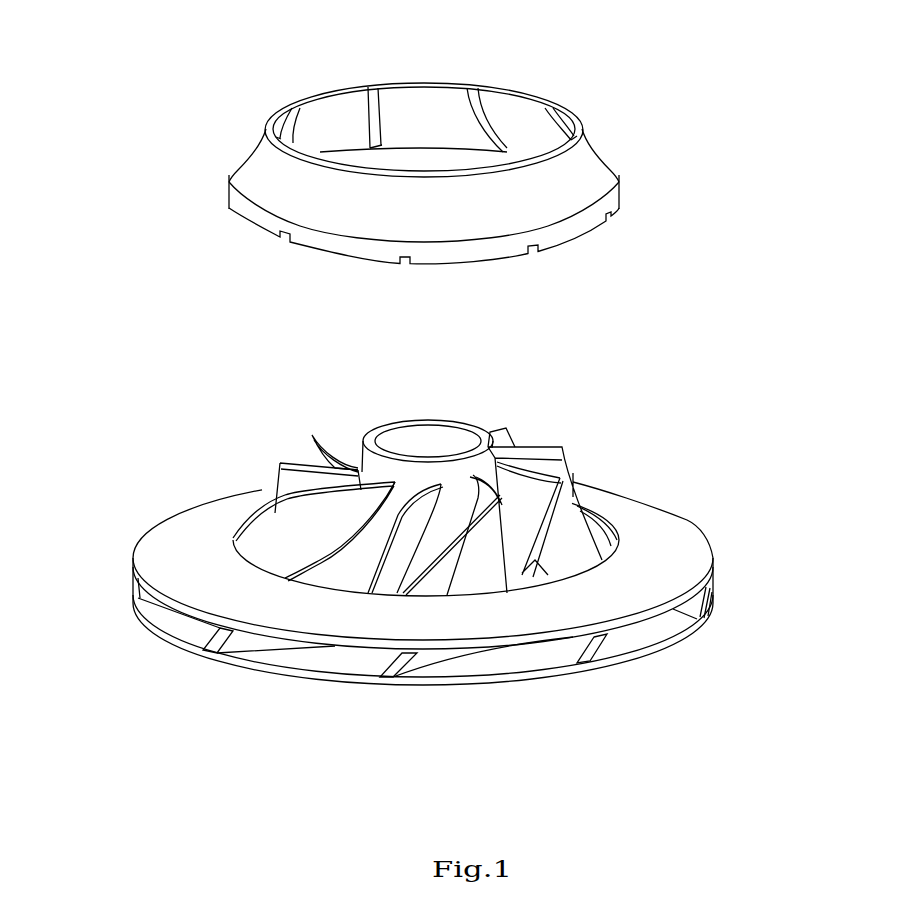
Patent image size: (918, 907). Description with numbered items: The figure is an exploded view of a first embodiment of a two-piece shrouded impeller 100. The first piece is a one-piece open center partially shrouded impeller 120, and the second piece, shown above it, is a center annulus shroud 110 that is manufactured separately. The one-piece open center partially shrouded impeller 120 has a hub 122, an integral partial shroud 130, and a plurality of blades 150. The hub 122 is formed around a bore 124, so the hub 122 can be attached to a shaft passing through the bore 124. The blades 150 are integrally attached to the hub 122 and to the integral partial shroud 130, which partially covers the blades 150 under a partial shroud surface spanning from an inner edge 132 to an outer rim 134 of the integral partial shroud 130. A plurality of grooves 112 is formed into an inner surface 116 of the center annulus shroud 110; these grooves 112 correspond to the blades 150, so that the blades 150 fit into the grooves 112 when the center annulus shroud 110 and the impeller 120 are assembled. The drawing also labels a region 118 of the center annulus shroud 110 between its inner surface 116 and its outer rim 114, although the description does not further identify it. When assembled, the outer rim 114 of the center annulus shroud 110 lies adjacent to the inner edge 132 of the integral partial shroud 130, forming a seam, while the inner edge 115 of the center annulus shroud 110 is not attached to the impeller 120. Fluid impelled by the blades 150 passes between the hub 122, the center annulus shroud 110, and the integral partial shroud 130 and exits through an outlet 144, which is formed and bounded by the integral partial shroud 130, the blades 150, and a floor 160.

The two-piece shrouded impeller 100 is at (138, 314).
The center annulus shroud 110 is at (634, 142).
The grooves 112 is at (373, 103).
The outer rim of center annulus shroud 114 is at (577, 230).
The inner edge of center annulus shroud 115 is at (503, 90).
The inner surface of center annulus shroud 116 is at (318, 115).
The conical outer wall 118 is at (595, 188).
The one-piece open center partially shrouded impeller 120 is at (669, 467).
The hub 122 is at (367, 442).
The bore 124 is at (428, 445).
The integral partial shroud 130 is at (657, 547).
The inner edge of integral partial shroud 132 is at (253, 517).
The outer rim of integral partial shroud 134 is at (135, 556).
The outlet 144 is at (724, 591).
The blades 150 is at (235, 643).
The floor 160 is at (665, 643).